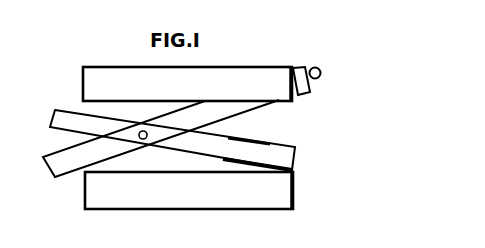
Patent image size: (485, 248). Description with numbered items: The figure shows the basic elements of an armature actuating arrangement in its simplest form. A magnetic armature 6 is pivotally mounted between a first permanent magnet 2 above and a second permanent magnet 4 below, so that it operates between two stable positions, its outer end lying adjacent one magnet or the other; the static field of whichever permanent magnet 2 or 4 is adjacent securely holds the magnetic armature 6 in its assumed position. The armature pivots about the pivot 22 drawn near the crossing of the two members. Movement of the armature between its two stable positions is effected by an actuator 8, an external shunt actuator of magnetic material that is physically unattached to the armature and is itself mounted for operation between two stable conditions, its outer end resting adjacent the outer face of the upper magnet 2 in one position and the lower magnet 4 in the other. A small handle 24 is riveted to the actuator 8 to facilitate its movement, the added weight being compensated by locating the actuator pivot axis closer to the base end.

The first permanent magnet 2 is at (282, 68).
The second permanent magnet 4 is at (287, 197).
The magnetic armature 6 is at (272, 143).
The actuator 8 is at (309, 93).
The pivot 22 is at (143, 139).
The handle 24 is at (320, 68).